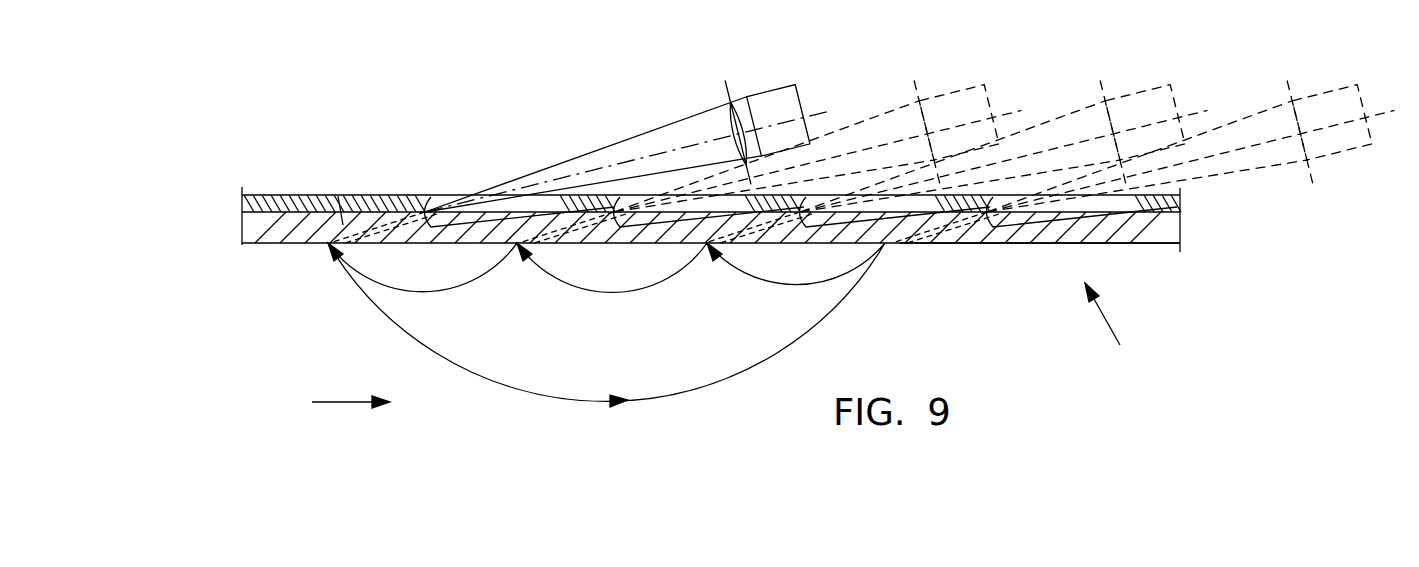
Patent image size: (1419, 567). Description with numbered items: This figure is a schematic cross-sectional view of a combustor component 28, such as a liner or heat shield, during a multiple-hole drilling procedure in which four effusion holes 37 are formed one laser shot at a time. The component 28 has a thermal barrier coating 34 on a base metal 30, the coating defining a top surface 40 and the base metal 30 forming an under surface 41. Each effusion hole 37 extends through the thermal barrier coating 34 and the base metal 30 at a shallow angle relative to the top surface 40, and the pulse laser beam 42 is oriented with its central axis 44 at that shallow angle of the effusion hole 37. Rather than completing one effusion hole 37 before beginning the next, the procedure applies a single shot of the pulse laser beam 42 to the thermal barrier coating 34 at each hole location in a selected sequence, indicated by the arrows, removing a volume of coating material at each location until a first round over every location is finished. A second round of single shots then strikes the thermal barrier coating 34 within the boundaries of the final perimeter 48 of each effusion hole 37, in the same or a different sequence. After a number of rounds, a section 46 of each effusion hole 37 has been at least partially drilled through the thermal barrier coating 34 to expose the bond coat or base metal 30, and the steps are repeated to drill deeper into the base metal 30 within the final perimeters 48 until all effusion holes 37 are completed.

The combustor component 28 is at (1118, 332).
The base metal 30 is at (1182, 232).
The thermal barrier coating 34 is at (1182, 204).
The effusion hole 37 is at (453, 222).
The top surface 40 is at (268, 195).
The under surface 41 is at (1015, 243).
The pulse laser beam 42 is at (746, 97).
The central axis of the pulse laser beam 44 is at (822, 107).
The section 46 is at (437, 200).
The final perimeter 48 is at (336, 192).